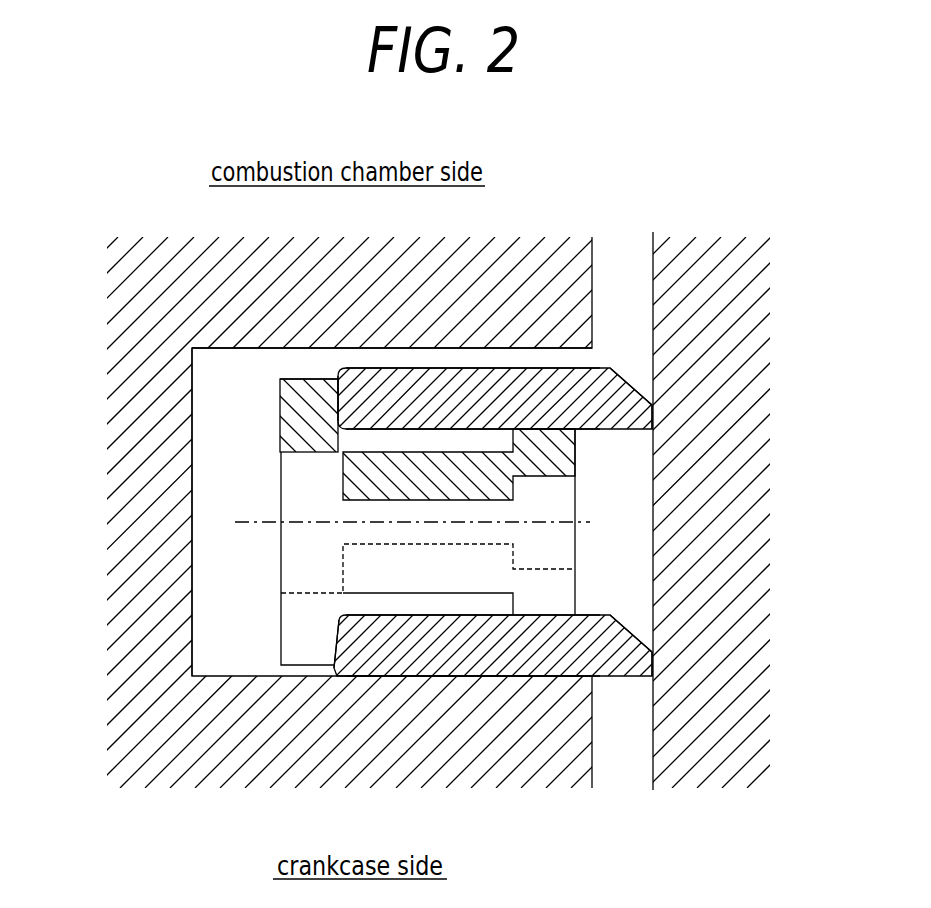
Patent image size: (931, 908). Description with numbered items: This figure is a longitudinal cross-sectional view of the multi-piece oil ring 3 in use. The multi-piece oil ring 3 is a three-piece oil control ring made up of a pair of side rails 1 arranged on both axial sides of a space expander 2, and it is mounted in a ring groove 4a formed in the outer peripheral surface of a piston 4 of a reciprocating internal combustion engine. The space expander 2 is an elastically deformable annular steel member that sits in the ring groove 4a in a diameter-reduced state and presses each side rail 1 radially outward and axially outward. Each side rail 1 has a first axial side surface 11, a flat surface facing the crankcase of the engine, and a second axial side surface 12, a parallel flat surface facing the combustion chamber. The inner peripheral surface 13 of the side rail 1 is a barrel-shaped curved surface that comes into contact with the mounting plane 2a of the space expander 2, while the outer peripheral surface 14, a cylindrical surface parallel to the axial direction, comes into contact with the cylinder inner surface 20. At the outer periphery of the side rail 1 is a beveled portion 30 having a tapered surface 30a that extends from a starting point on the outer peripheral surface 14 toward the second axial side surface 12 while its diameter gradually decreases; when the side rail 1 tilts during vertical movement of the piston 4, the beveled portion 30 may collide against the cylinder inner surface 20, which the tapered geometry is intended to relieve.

The side rail 1 is at (520, 365).
The space expander 2 is at (287, 677).
The mounting plane 2a is at (338, 365).
The multi-piece oil ring 3 is at (584, 487).
The piston 4 is at (594, 245).
The ring groove 4a is at (231, 349).
The first axial side surface 11 is at (398, 430).
The second axial side surface 12 is at (446, 367).
The inner peripheral surface 13 is at (340, 416).
The outer peripheral surface 14 is at (657, 415).
The cylinder inner surface 20 is at (656, 281).
The beveled portion 30 is at (618, 366).
The tapered surface 30a is at (655, 378).